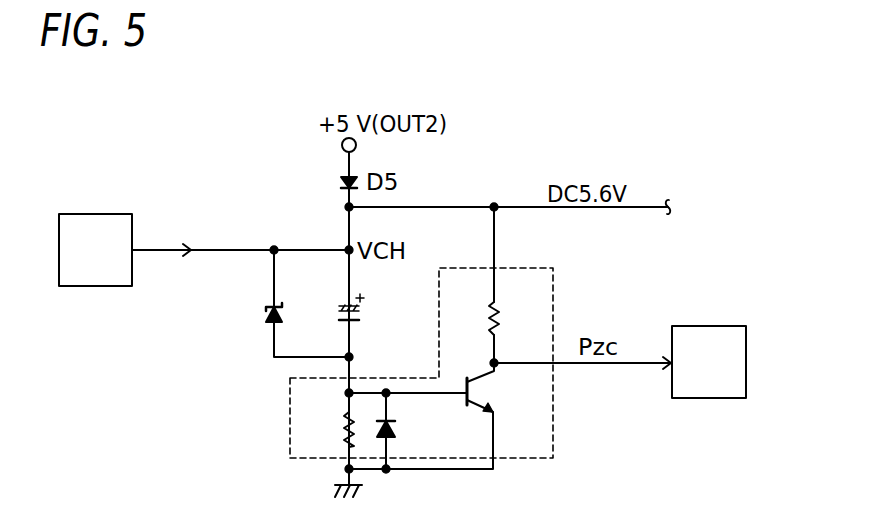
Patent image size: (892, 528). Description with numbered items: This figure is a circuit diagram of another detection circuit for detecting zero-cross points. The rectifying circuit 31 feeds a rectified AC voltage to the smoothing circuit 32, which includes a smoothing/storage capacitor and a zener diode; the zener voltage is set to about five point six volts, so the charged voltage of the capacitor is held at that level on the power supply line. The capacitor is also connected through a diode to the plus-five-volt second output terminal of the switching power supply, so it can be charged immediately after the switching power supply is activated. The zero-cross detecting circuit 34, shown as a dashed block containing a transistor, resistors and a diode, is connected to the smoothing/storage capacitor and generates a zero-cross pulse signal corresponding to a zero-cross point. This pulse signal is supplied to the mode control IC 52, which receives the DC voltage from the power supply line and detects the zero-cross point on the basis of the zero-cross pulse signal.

The rectifying circuit 31 is at (119, 214).
The smoothing circuit 32 is at (245, 355).
The zero-cross detecting circuit 34 is at (556, 296).
The mode control IC 52 is at (710, 326).